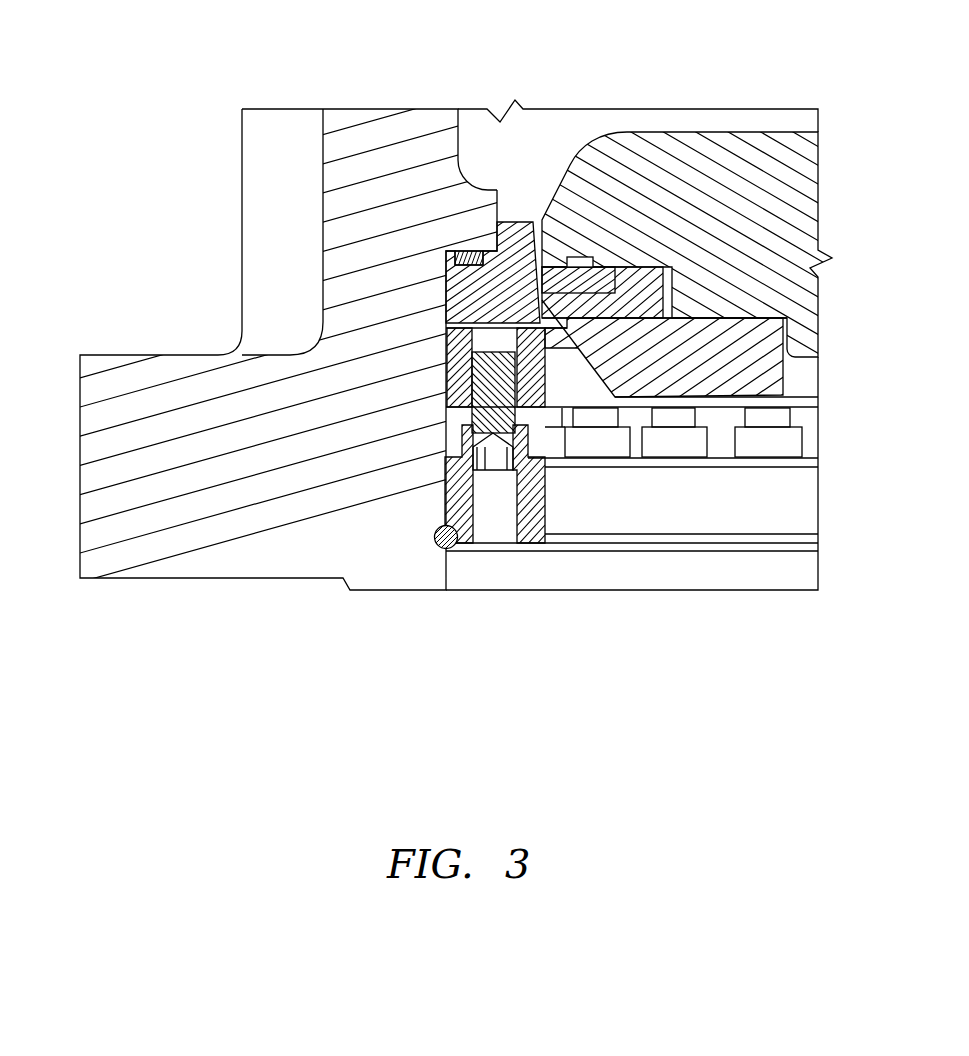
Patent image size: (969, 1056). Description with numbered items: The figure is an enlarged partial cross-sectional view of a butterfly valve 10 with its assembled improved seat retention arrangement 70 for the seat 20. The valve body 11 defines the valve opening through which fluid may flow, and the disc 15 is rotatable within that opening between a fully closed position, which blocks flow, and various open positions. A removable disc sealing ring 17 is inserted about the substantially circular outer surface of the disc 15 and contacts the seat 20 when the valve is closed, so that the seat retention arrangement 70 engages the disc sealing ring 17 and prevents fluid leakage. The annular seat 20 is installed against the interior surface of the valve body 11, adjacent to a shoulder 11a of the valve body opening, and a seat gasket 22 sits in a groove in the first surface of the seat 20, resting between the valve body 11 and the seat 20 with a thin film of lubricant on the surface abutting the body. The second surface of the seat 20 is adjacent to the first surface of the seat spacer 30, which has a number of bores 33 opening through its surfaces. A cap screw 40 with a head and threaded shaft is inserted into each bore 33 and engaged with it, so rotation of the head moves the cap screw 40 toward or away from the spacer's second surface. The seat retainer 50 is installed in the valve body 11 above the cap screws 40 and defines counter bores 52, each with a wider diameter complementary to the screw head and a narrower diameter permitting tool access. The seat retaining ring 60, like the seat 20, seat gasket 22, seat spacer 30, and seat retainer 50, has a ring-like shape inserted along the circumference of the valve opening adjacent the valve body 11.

The butterfly valve 10 is at (122, 84).
The valve body 11 is at (100, 355).
The shoulder 11a is at (492, 190).
The disc 15 is at (663, 132).
The disc sealing ring 17 is at (597, 260).
The seat 20 is at (513, 222).
The seat gasket 22 is at (458, 250).
The seat spacer 30 is at (445, 380).
The bore 33 is at (563, 330).
The cap screw 40 is at (445, 418).
The seat retainer 50 is at (547, 487).
The counter bore 52 is at (518, 468).
The seat retaining ring 60 is at (437, 552).
The seat retention arrangement 70 is at (385, 344).